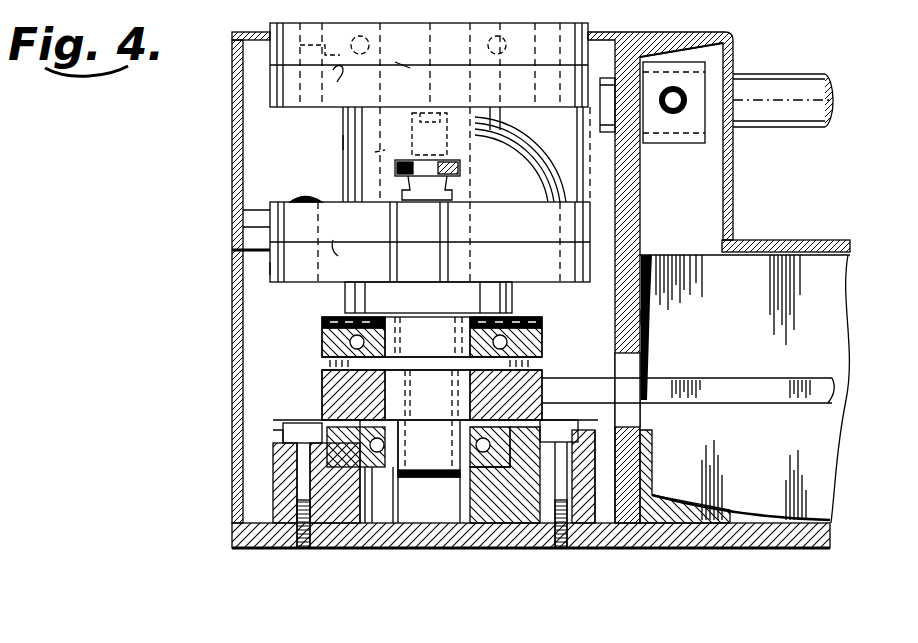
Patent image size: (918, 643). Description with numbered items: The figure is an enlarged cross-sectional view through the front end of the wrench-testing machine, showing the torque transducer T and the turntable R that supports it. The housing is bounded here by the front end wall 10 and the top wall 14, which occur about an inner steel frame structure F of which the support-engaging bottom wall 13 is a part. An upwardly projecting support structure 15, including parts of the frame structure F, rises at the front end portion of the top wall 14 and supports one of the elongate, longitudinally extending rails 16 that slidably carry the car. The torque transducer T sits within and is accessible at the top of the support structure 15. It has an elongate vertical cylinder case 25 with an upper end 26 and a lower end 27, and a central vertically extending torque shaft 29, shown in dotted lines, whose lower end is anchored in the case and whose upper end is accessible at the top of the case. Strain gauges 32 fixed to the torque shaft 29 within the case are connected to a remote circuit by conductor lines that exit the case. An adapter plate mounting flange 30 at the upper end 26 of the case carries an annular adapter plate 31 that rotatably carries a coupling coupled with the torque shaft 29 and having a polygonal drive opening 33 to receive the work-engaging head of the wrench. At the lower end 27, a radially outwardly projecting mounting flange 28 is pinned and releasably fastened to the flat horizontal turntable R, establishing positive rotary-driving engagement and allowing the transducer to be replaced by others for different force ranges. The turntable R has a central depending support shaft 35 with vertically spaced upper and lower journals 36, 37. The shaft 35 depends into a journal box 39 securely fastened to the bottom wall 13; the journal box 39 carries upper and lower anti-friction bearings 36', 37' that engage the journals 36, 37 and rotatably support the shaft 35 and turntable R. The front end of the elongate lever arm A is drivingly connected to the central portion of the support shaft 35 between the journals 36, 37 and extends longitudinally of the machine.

The front end wall 10 is at (235, 350).
The bottom wall 13 is at (739, 548).
The top wall 14 is at (794, 240).
The support structure 15 is at (718, 33).
The rails 16 is at (808, 57).
The cylinder case 25 is at (343, 118).
The upper end 26 is at (344, 84).
The lower end 27 is at (348, 253).
The mounting flange 28 is at (270, 210).
The torque shaft 29 is at (376, 152).
The adapter plate mounting flange 30 is at (276, 88).
The adapter plate 31 is at (272, 52).
The strain gauges 32 is at (505, 143).
The polygonal drive opening 33 is at (397, 63).
The support shaft 35 is at (322, 393).
The upper journal 36 is at (456, 298).
The upper anti-friction bearing 36' is at (432, 341).
The lower journal 37 is at (469, 504).
The lower anti-friction bearing 37' is at (362, 501).
The journal box 39 is at (331, 546).
The torque transducer T is at (341, 141).
The turntable R is at (268, 268).
The frame structure F is at (645, 316).
The lever arm A is at (741, 376).